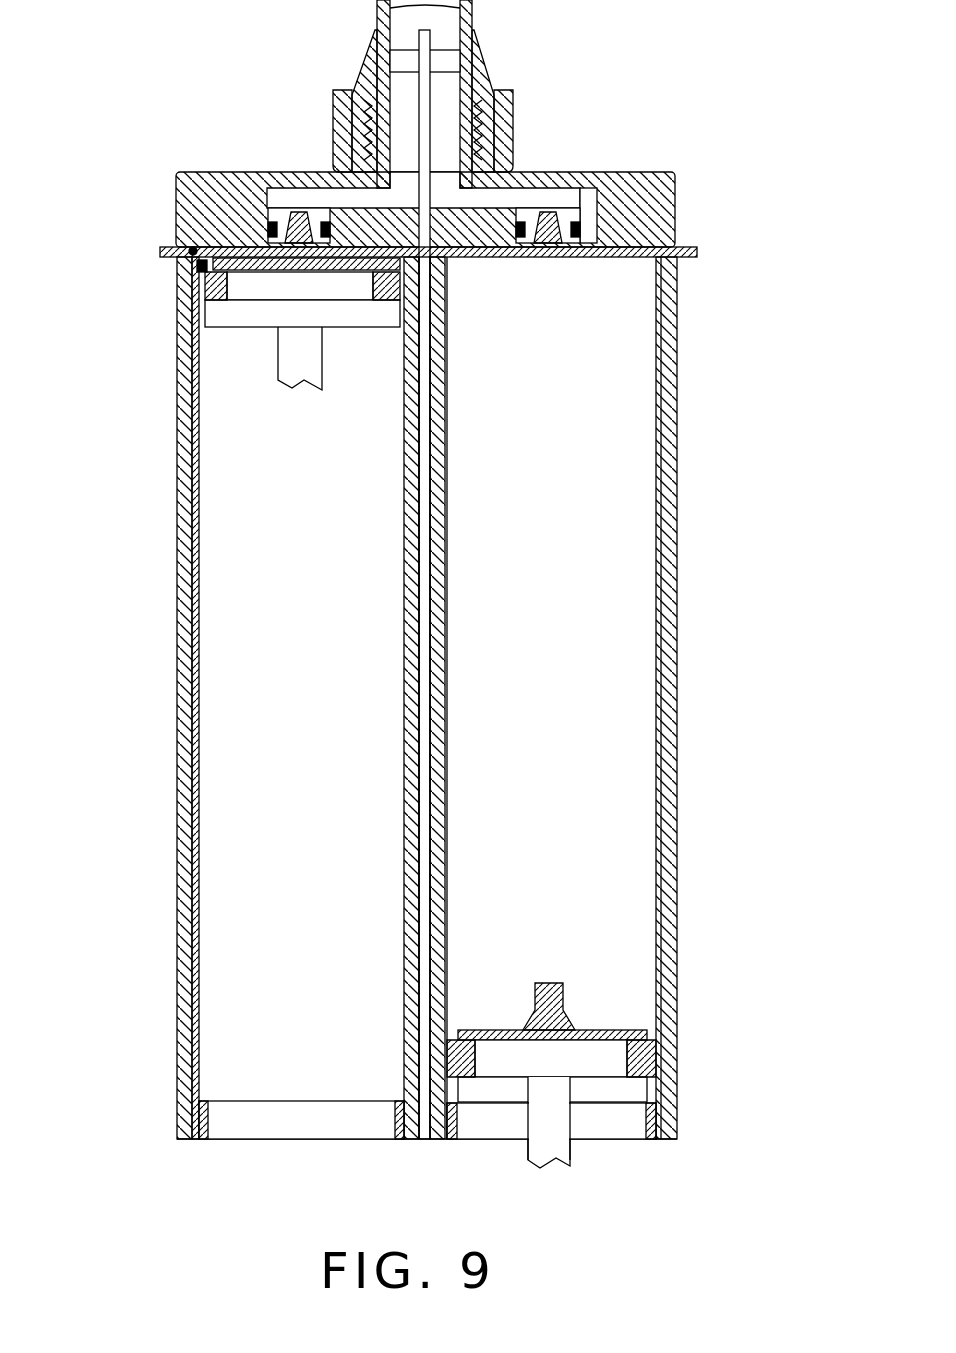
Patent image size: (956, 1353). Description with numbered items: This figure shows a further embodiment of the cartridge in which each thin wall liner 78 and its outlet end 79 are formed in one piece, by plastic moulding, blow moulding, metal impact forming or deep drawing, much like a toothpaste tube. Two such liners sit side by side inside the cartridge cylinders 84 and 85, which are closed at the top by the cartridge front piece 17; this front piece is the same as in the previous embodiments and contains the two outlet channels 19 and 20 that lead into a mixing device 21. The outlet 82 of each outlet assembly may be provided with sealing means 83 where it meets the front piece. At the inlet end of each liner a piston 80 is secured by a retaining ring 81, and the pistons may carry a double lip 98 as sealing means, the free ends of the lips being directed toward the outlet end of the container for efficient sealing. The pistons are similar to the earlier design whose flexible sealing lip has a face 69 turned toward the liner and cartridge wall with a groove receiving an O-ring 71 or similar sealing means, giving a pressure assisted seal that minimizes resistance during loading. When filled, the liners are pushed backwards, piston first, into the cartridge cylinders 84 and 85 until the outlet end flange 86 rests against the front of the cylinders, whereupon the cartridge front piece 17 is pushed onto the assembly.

The front piece 17 is at (660, 171).
The outlet channel 19 is at (400, 132).
The outlet channel 20 is at (450, 120).
The mixing device 21 is at (458, 8).
The face of sealing lip 69 is at (191, 247).
The O-ring 71 is at (202, 266).
The liner 78 is at (199, 518).
The outlet end 79 is at (584, 259).
The piston 80 is at (243, 337).
The retaining ring 81 is at (203, 1132).
The outlet 82 is at (540, 250).
The sealing means 83 is at (575, 226).
The cartridge cylinder 84 is at (172, 487).
The cartridge cylinder 85 is at (682, 478).
The outlet end flange 86 is at (697, 252).
The double lip 98 is at (667, 1057).